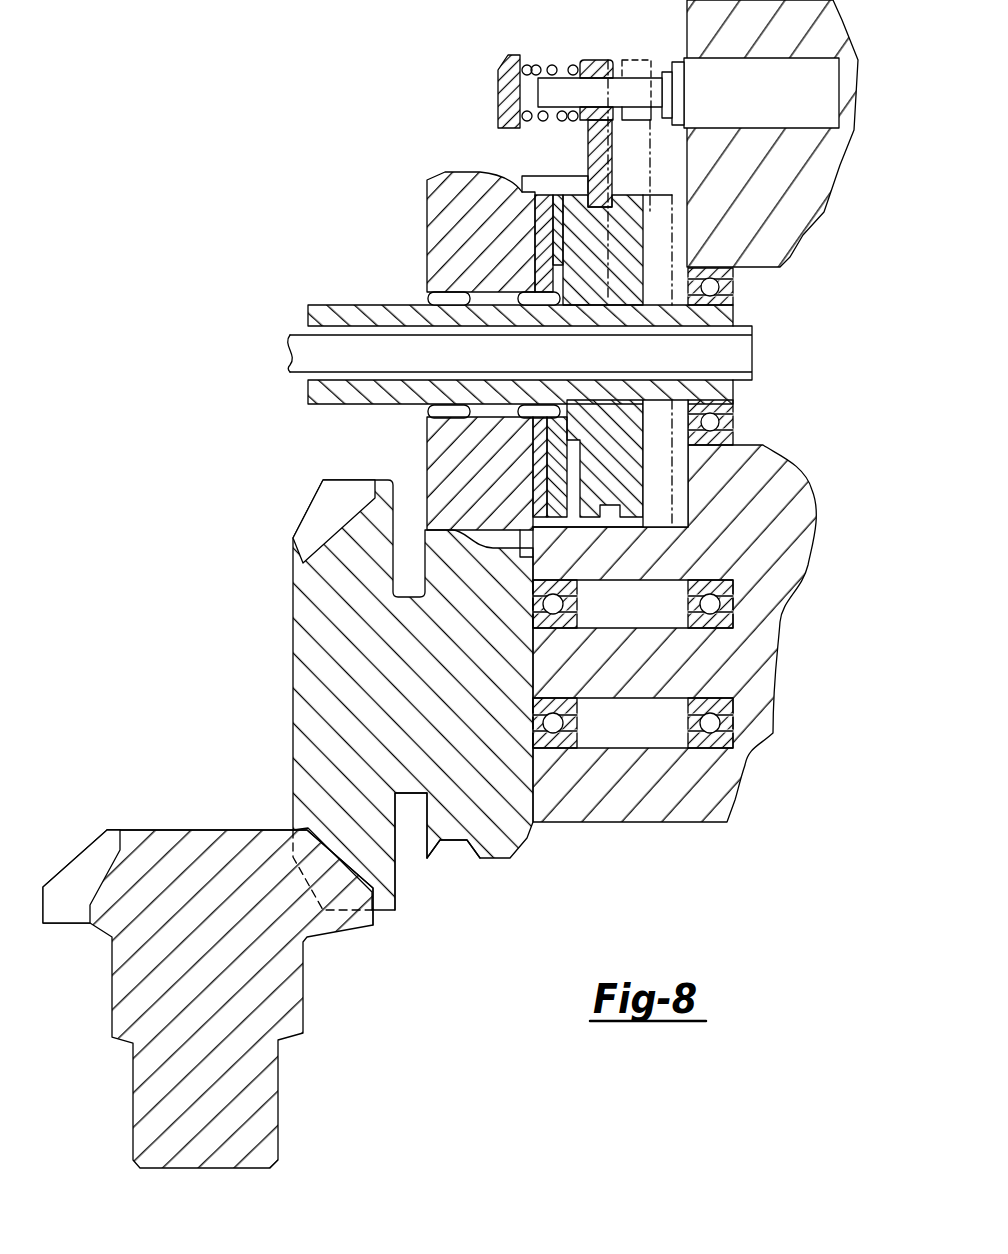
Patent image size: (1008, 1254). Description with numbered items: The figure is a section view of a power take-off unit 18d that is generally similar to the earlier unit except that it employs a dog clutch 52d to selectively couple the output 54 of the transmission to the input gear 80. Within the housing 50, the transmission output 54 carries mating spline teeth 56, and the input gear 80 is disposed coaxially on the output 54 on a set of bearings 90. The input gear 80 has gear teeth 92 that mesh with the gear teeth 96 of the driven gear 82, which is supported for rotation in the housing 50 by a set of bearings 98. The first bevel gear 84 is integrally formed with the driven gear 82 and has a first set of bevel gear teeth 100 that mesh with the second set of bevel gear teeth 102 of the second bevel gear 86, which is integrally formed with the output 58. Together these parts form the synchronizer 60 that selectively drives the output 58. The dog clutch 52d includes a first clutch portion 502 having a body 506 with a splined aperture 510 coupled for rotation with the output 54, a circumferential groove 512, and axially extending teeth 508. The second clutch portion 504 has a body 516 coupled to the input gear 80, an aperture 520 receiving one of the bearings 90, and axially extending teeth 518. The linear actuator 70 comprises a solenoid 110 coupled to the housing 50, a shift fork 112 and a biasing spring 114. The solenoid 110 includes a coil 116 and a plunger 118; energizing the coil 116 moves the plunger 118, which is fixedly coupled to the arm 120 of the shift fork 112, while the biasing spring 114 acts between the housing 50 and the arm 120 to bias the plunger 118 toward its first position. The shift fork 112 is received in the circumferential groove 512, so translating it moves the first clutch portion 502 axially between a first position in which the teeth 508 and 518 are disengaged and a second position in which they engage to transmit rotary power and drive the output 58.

The power take-off unit 18d is at (676, 669).
The housing 50 is at (733, 780).
The dog clutch 52d is at (617, 300).
The output of the transmission 54 is at (345, 305).
The mating spline teeth 56 is at (690, 300).
The output 58 is at (208, 971).
The synchronizer 60 is at (594, 345).
The linear actuator 70 is at (684, 153).
The input gear 80 is at (428, 473).
The driven gear 82 is at (480, 847).
The first bevel gear 84 is at (382, 705).
The second bevel gear 86 is at (73, 873).
The bearings 90 is at (420, 411).
The gear teeth 92 is at (443, 178).
The gear teeth 96 is at (437, 850).
The bearings 98 is at (733, 593).
The first set of bevel gear teeth 100 is at (308, 523).
The second set of bevel gear teeth 102 is at (142, 833).
The solenoid 110 is at (775, 115).
The shift fork 112 is at (603, 165).
The biasing spring 114 is at (543, 115).
The coil 116 is at (693, 110).
The plunger 118 is at (643, 78).
The arm 120 is at (590, 60).
The first clutch portion 502 is at (640, 182).
The second clutch portion 504 is at (549, 188).
The body 506 is at (630, 493).
The axially extending teeth 508 is at (555, 528).
The splined aperture 510 is at (630, 400).
The circumferential groove 512 is at (612, 200).
The body 516 is at (538, 248).
The axially extending teeth 518 is at (567, 490).
The aperture 520 is at (543, 435).